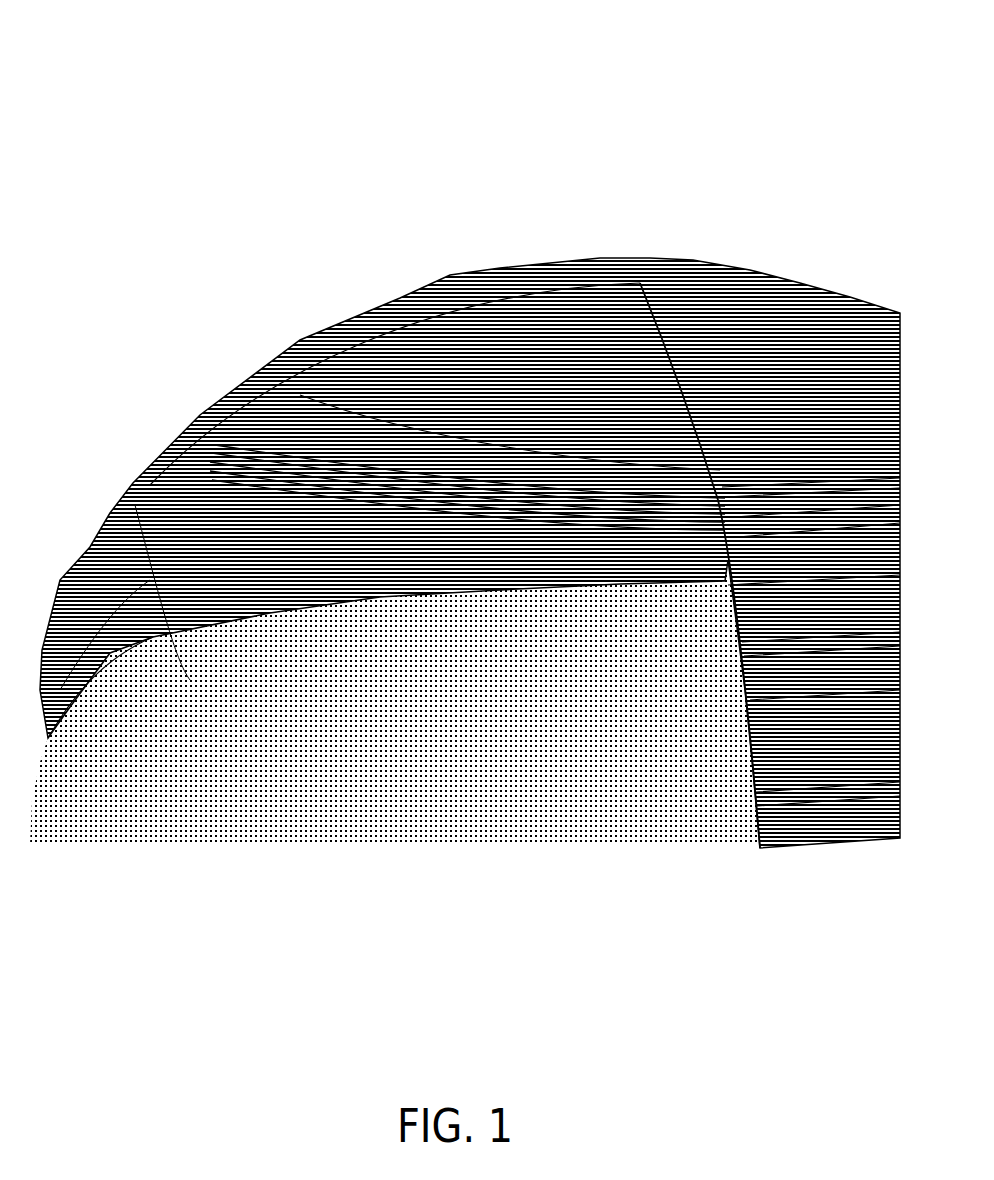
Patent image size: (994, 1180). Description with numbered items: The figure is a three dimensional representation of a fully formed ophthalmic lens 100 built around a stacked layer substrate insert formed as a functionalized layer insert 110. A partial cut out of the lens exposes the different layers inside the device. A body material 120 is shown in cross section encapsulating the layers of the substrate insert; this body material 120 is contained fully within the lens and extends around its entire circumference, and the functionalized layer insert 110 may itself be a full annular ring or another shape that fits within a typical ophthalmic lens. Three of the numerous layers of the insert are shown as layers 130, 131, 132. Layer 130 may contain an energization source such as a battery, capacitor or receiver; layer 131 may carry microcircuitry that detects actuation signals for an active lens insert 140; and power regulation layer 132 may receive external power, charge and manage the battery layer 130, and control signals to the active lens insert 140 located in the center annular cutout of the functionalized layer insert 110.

The fully formed ophthalmic lens 100 is at (366, 200).
The functionalized layer insert 110 is at (289, 438).
The body material 120 is at (176, 540).
The layer 130 is at (420, 488).
The layer 131 is at (471, 515).
The power regulation layer 132 is at (539, 545).
The active lens insert 140 is at (552, 338).